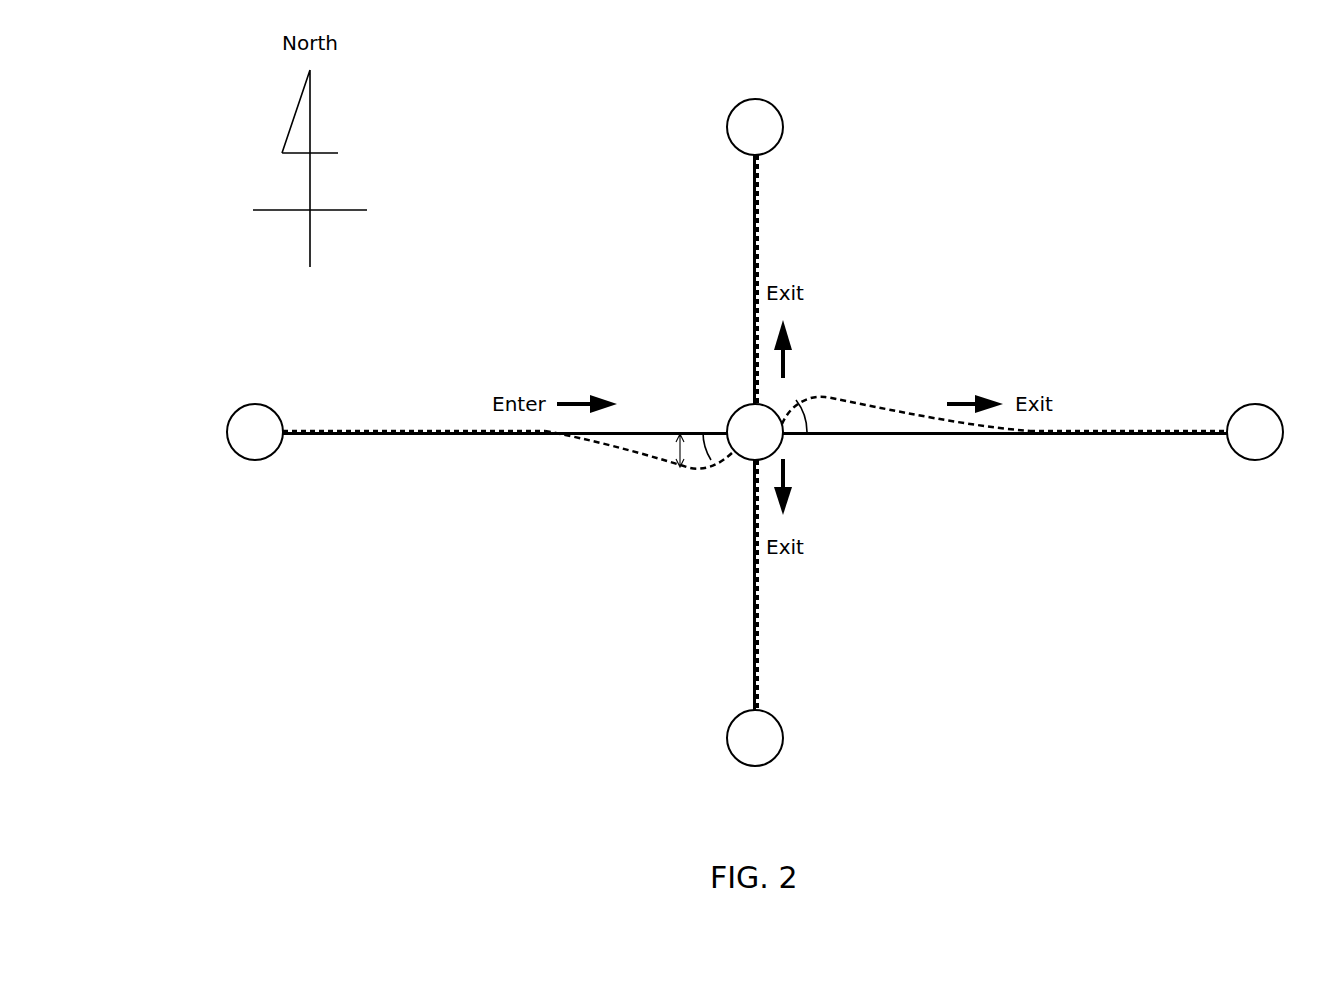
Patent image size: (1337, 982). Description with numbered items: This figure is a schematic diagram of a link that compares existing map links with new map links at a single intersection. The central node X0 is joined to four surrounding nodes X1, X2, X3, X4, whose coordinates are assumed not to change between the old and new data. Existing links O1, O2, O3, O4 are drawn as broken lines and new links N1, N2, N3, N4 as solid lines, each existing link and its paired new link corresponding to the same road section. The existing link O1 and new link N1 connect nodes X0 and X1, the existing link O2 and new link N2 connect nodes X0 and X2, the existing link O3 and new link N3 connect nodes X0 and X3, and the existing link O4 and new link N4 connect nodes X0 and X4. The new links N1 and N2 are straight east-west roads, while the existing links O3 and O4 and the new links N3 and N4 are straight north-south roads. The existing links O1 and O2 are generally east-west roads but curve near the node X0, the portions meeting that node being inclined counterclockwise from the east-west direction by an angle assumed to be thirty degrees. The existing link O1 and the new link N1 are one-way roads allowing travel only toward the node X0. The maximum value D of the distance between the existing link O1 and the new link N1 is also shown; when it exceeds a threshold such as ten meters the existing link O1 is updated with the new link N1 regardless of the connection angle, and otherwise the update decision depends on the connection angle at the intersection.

The node X0 is at (746, 405).
The node X1 is at (255, 404).
The node X2 is at (1255, 404).
The node X3 is at (755, 98).
The node X4 is at (755, 768).
The new link N1 is at (645, 433).
The new link N2 is at (868, 433).
The new link N3 is at (812, 210).
The new link N4 is at (812, 627).
The existing link O1 is at (655, 460).
The existing link O2 is at (853, 399).
The existing link O3 is at (757, 233).
The existing link O4 is at (757, 600).
The maximum value of the distance D is at (672, 457).